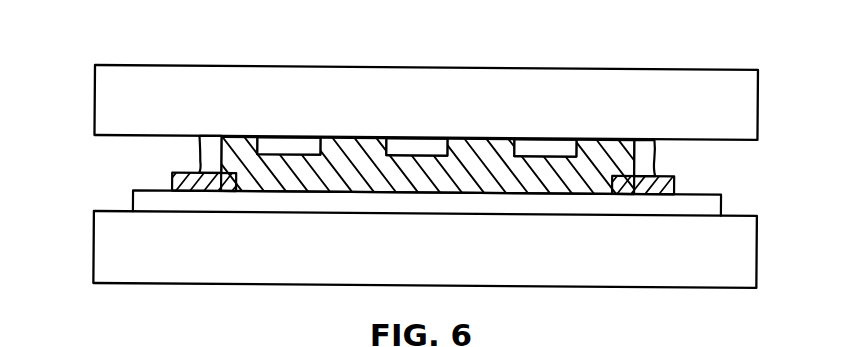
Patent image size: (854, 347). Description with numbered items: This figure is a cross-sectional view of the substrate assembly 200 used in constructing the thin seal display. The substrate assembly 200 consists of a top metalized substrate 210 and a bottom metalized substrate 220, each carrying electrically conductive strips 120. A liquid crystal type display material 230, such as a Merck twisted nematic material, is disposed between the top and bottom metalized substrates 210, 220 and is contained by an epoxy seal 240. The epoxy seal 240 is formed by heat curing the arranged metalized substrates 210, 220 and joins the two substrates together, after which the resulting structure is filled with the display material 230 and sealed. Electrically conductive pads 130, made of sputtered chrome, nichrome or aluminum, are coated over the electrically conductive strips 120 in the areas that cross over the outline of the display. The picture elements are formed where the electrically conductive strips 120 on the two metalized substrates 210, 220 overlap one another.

The substrate assembly 200 is at (81, 53).
The top metalized substrate 210 is at (760, 98).
The bottom metalized substrate 220 is at (760, 247).
The electrically conductive strips 120 is at (291, 144).
The electrically conductive pads 130 is at (173, 174).
The liquid crystal type display material 230 is at (498, 152).
The epoxy seal 240 is at (200, 148).